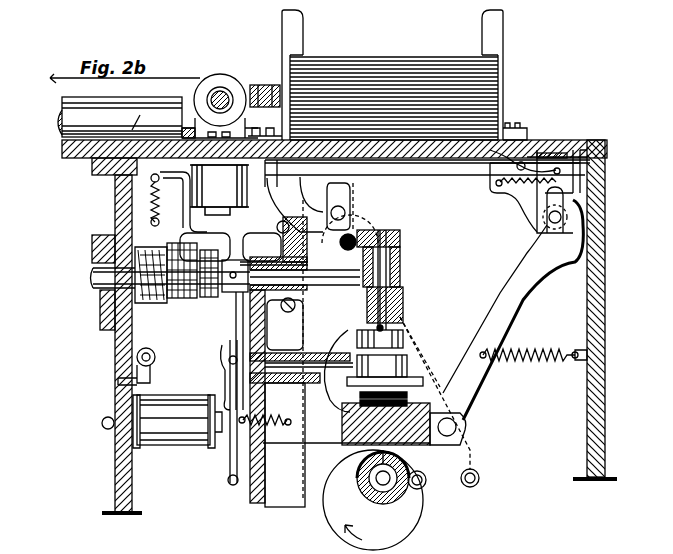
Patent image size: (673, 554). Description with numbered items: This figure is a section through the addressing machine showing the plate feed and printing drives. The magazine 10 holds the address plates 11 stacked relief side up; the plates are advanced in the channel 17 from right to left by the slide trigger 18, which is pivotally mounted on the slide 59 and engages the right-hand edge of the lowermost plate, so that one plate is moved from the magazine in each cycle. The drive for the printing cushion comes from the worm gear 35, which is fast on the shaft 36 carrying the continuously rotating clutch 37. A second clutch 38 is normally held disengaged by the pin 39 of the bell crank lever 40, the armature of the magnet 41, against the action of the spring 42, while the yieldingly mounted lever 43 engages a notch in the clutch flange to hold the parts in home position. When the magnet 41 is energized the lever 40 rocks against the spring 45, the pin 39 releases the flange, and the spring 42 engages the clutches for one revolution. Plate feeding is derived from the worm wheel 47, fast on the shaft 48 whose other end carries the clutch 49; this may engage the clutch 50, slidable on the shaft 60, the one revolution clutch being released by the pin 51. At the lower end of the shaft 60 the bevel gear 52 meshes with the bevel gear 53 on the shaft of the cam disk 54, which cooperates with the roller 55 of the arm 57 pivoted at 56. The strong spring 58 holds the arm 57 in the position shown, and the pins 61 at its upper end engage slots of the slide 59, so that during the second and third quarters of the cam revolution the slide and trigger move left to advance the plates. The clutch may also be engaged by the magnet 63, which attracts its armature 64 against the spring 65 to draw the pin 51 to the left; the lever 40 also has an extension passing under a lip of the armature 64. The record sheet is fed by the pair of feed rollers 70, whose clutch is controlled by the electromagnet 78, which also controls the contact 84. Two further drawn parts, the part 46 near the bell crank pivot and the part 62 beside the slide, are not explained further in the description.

The magazine 10 is at (498, 40).
The address plates 11 is at (378, 65).
The channel 17 is at (140, 114).
The slide trigger 18 is at (520, 152).
The worm gear 35 is at (305, 341).
The shaft 36 is at (276, 396).
The clutch 37 is at (212, 291).
The clutch 38 is at (182, 287).
The pin 39 is at (214, 262).
The bell crank lever 40 is at (258, 235).
The magnet 41 is at (219, 190).
The spring 42 is at (120, 290).
The yieldingly mounted lever 43 is at (168, 347).
The spring 45 is at (155, 190).
The pivot 46 is at (347, 234).
The worm wheel 47 is at (398, 245).
The shaft 48 is at (398, 303).
The clutch 49 is at (403, 337).
The clutch 50 is at (410, 374).
The pin 51 is at (301, 371).
The bevel gear 52 is at (372, 452).
The bevel gear 53 is at (420, 490).
The cam disk 54 is at (412, 520).
The roller 55 is at (454, 482).
The pivot 56 is at (456, 427).
The arm 57 is at (503, 300).
The spring 58 is at (540, 350).
The slide 59 is at (566, 183).
The shaft 60 is at (355, 437).
The pins 61 is at (550, 224).
The spring 62 is at (535, 191).
The magnet 63 is at (182, 430).
The armature 64 is at (233, 386).
The spring 65 is at (236, 332).
The feed rollers 70 is at (62, 108).
The electromagnet 78 is at (215, 76).
The contact 84 is at (267, 88).